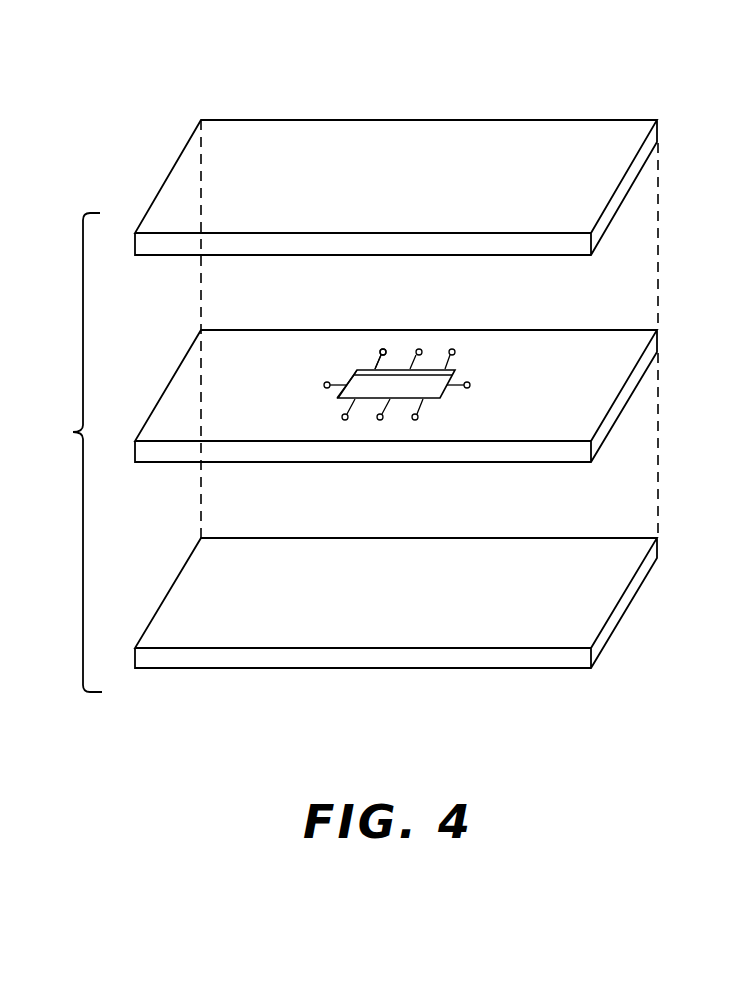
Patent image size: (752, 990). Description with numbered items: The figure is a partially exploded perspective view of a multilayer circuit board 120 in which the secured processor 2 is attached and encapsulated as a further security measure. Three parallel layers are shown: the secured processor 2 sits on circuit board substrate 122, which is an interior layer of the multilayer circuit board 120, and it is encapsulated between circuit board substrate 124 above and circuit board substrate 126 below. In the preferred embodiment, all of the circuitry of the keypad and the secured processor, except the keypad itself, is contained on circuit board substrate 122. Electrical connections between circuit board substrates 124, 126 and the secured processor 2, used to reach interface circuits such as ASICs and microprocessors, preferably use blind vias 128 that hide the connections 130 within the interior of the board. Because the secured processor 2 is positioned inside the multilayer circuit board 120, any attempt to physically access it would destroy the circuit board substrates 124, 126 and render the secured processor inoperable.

The multilayer circuit board 120 is at (64, 452).
The circuit board substrate 122 is at (610, 418).
The circuit board substrate 124 is at (610, 213).
The circuit board substrate 126 is at (610, 625).
The secured processor 2 is at (443, 383).
The blind vias 128 is at (325, 388).
The connections 130 is at (375, 367).